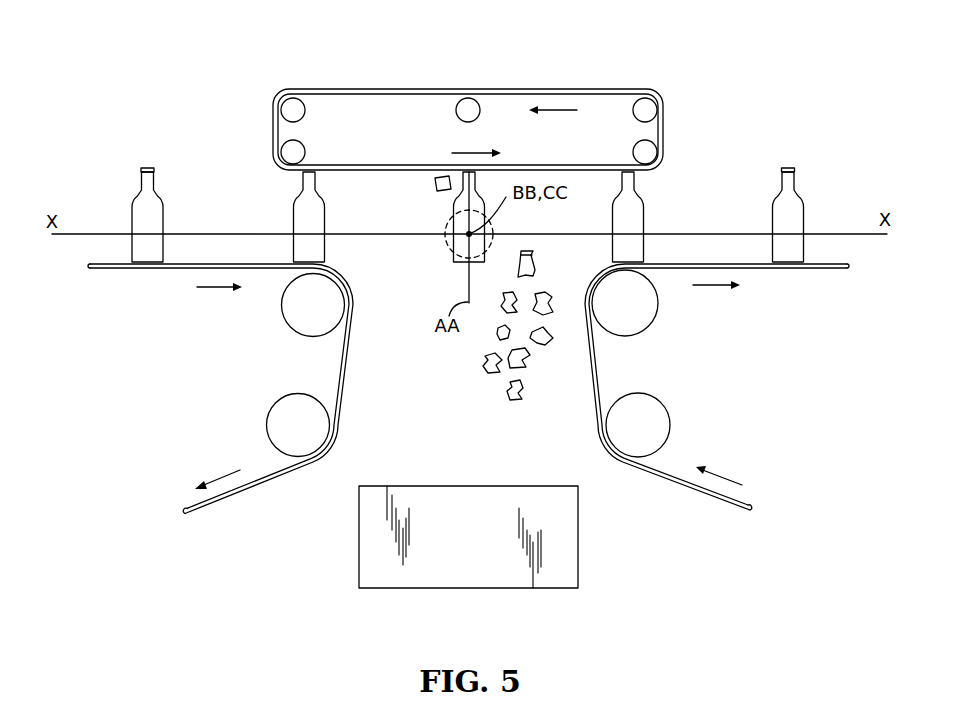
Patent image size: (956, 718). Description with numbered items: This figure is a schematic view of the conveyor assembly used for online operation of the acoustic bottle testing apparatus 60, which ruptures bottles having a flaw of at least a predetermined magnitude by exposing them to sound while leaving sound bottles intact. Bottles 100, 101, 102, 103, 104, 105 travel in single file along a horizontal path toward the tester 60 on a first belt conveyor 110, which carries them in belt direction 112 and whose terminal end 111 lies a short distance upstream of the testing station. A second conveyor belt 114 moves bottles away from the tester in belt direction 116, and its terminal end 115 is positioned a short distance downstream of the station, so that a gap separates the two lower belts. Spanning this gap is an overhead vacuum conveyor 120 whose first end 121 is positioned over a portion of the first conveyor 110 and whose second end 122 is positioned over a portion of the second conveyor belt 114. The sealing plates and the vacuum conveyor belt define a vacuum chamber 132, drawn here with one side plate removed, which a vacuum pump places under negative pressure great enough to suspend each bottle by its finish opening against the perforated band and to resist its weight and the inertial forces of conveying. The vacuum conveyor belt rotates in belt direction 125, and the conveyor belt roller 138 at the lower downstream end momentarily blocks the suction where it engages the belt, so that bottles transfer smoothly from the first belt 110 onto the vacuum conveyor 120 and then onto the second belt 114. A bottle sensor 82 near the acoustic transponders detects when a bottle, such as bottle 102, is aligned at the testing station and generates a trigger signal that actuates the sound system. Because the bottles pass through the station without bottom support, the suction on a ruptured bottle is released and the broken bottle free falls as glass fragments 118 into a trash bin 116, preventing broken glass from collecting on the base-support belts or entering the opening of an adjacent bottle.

The bottle testing apparatus 60 is at (441, 225).
The bottle sensor 82 is at (435, 184).
The bottle 100 is at (131, 213).
The bottle 101 is at (292, 216).
The bottle 102 is at (458, 265).
The bottle 103 is at (535, 266).
The bottle 104 is at (645, 212).
The bottle 105 is at (805, 212).
The belt conveyor 110 is at (252, 492).
The terminal end 111 is at (352, 316).
The belt direction 112 is at (213, 292).
The second conveyor belt 114 is at (836, 263).
The terminal end 115 is at (578, 322).
The belt direction / trash bin 116 is at (718, 290).
The glass fragments 118 is at (425, 404).
The vacuum conveyor 120 is at (336, 82).
The first end 121 is at (273, 127).
The second end 122 is at (663, 124).
The belt direction 125 is at (558, 110).
The vacuum chamber 132 is at (394, 115).
The conveyor belt roller 138 is at (292, 153).